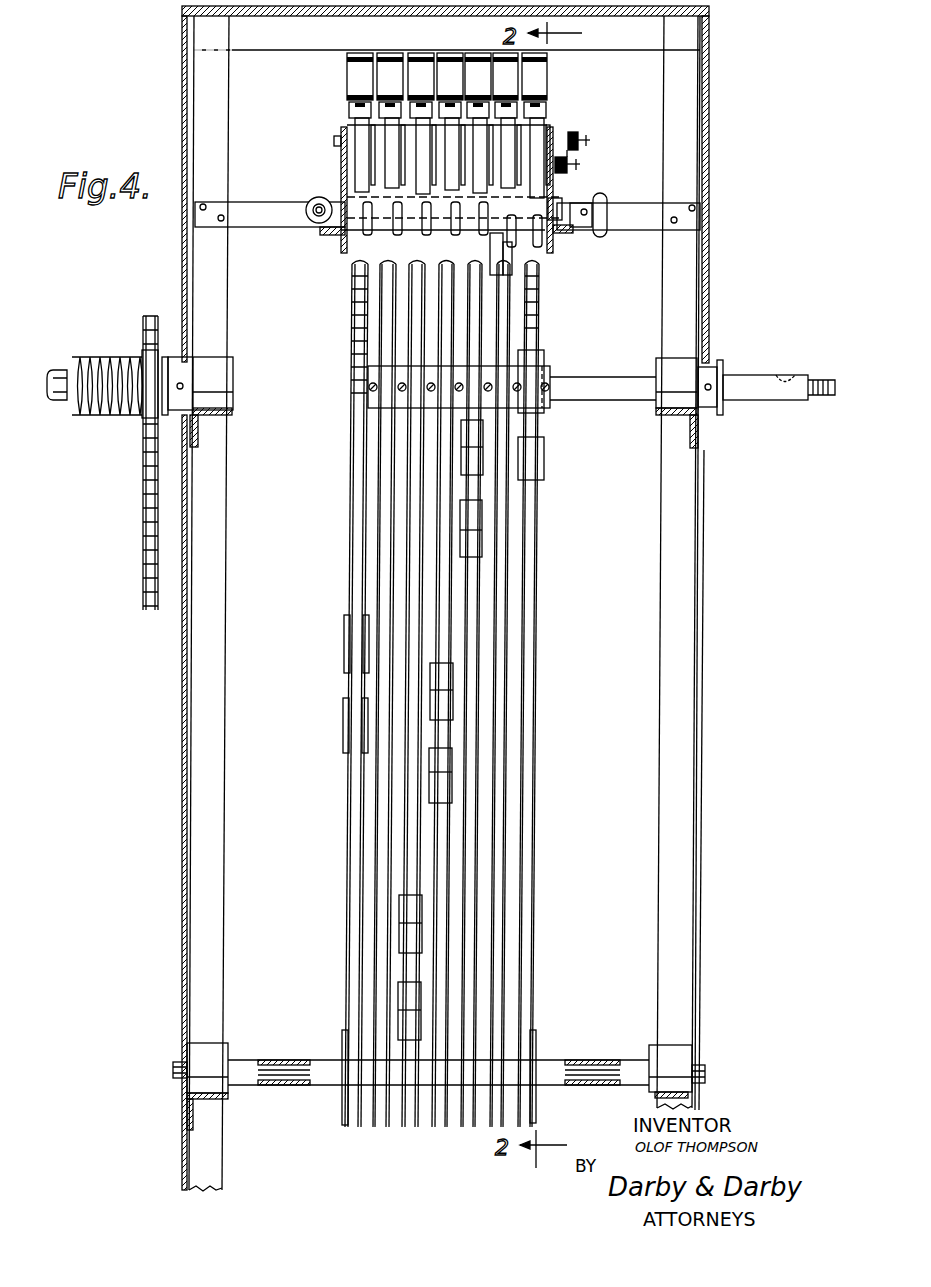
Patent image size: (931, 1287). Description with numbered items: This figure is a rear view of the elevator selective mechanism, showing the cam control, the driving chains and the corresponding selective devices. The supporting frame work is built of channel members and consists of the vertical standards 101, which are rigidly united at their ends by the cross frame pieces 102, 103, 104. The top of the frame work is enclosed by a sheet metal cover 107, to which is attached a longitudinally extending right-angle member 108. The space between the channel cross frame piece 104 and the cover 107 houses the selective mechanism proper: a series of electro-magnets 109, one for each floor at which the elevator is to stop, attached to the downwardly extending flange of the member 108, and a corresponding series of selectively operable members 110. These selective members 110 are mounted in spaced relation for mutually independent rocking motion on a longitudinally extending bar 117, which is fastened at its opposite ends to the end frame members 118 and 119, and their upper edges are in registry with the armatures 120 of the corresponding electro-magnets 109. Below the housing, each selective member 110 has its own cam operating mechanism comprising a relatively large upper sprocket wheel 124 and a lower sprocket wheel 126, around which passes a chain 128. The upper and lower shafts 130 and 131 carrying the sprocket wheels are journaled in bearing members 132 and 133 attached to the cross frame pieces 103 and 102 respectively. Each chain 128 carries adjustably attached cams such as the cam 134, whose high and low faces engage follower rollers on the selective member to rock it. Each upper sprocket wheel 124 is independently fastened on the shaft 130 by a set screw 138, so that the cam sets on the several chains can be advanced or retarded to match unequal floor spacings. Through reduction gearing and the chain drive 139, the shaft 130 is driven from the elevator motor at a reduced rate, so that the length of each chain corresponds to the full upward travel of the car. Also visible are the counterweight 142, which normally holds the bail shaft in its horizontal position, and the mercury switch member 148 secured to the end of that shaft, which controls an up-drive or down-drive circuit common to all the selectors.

The vertical standards 101 is at (226, 692).
The cross frame piece 102 is at (662, 418).
The cross frame piece 103 is at (232, 415).
The cross frame piece 104 is at (322, 230).
The sheet metal cover 107 is at (608, 4).
The right-angle member 108 is at (445, 28).
The electro-magnets 109 is at (548, 80).
The selectively operable members 110 is at (548, 128).
The bar 117 is at (334, 141).
The end frame member 118 is at (340, 168).
The end frame member 119 is at (553, 190).
The armatures 120 is at (360, 117).
The upper sprocket wheel 124 is at (540, 307).
The lower sprocket wheel 126 is at (536, 1035).
The chain 128 is at (531, 706).
The shaft 130 is at (584, 373).
The shaft 131 is at (588, 1060).
The bearing members 132 is at (233, 362).
The bearing members 133 is at (228, 1045).
The cam 134 is at (546, 281).
The set screw 138 is at (372, 390).
The chain drive 139 is at (142, 554).
The counterweight 142 is at (308, 204).
The mercury switch member 148 is at (600, 238).